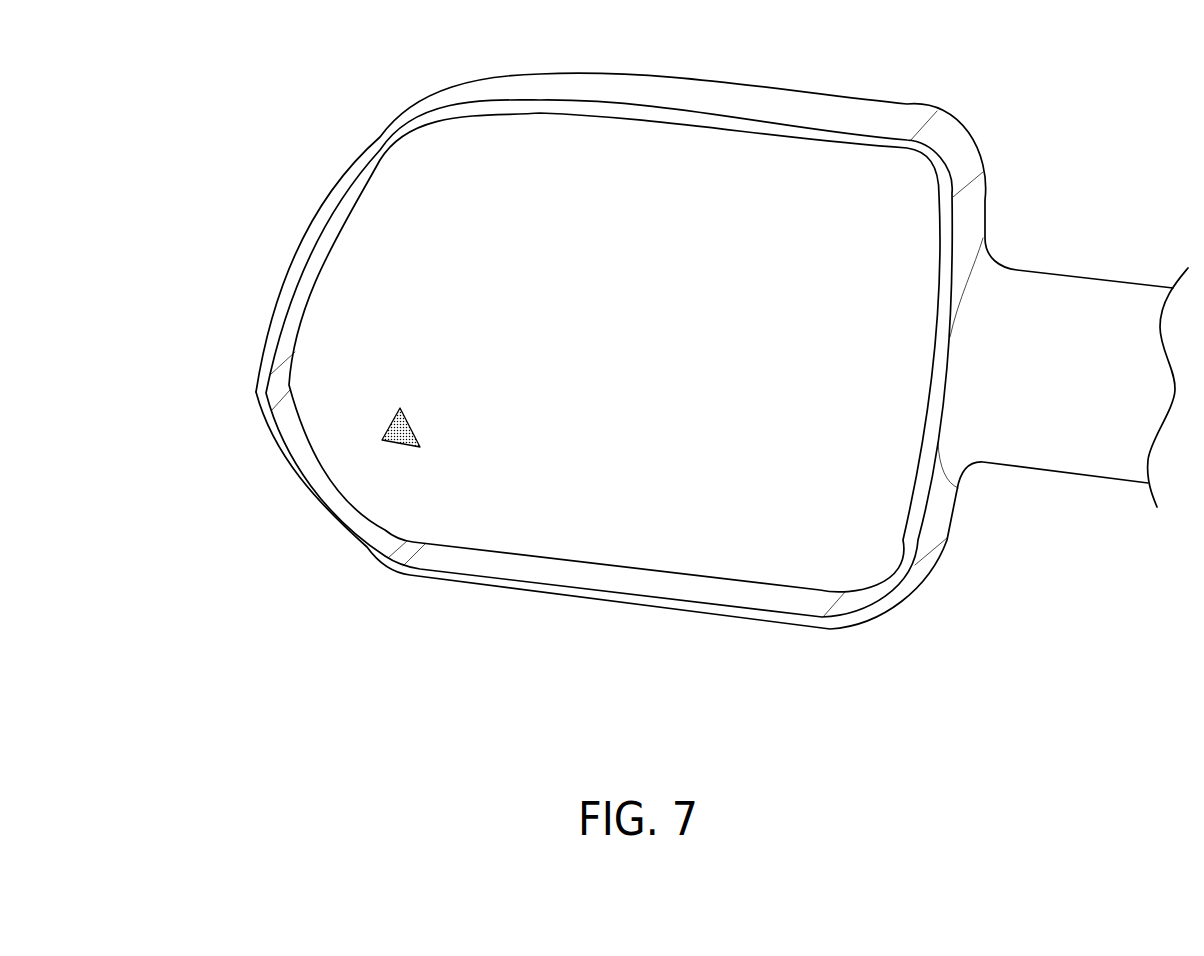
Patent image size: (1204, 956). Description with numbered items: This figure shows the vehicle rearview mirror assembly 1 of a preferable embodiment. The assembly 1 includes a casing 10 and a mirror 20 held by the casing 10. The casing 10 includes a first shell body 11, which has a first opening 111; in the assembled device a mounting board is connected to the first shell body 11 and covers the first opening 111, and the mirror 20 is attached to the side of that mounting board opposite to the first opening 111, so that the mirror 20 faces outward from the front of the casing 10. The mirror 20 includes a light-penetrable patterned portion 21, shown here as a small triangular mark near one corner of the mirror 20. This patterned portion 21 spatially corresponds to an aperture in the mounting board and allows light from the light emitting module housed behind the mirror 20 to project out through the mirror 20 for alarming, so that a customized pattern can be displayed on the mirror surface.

The vehicle rearview mirror assembly 1 is at (235, 196).
The casing 10 is at (1004, 125).
The first shell body 11 is at (970, 208).
The first opening 111 is at (793, 597).
The mirror 20 is at (537, 526).
The light-penetrable patterned portion 21 is at (392, 440).